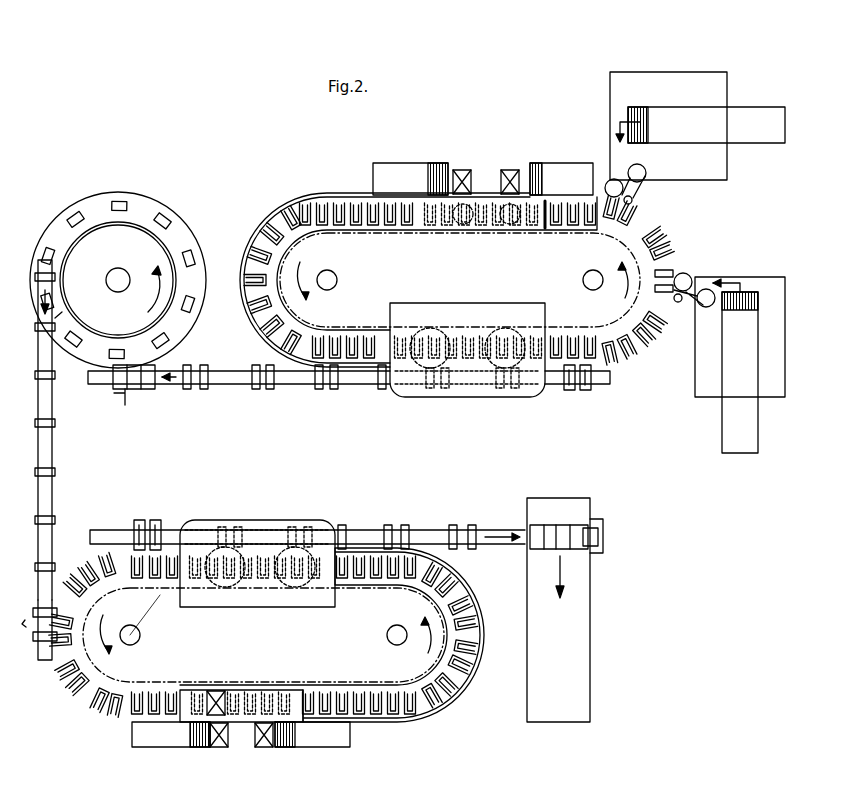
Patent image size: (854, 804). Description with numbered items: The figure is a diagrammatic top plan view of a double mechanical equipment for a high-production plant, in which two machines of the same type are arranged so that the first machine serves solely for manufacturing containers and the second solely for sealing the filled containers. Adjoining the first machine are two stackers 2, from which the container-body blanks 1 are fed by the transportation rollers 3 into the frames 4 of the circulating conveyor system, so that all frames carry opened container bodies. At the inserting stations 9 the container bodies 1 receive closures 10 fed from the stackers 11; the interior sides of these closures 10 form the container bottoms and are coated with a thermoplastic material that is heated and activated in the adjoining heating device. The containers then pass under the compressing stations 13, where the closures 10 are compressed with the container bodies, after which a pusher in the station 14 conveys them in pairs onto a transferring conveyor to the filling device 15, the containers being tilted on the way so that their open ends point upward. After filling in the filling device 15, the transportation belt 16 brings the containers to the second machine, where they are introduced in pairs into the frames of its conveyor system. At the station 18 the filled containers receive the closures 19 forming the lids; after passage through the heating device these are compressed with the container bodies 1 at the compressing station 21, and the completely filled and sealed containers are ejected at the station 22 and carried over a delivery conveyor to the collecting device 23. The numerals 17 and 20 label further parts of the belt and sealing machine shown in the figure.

The container-body blanks 1 is at (640, 107).
The stackers 2 is at (700, 70).
The transportation rollers 3 is at (706, 288).
The frames 4 is at (750, 300).
The inserting stations 9 is at (505, 222).
The closures 10 is at (510, 168).
The stackers 11 is at (408, 163).
The compressing stations 13 is at (495, 372).
The station 14 is at (585, 390).
The filling device 15 is at (117, 195).
The transportation belt 16 is at (44, 318).
The conveyor outlet 17 is at (32, 640).
The station 18 is at (262, 690).
The closures 19 is at (265, 747).
The guide rails 20 is at (180, 747).
The compressing station 21 is at (292, 520).
The station 22 is at (153, 520).
The collecting device 23 is at (605, 540).